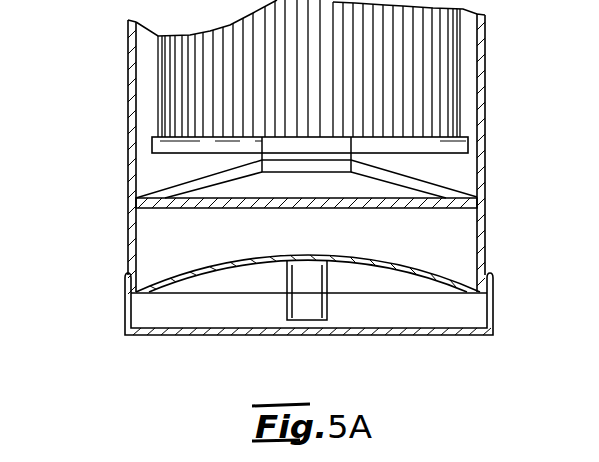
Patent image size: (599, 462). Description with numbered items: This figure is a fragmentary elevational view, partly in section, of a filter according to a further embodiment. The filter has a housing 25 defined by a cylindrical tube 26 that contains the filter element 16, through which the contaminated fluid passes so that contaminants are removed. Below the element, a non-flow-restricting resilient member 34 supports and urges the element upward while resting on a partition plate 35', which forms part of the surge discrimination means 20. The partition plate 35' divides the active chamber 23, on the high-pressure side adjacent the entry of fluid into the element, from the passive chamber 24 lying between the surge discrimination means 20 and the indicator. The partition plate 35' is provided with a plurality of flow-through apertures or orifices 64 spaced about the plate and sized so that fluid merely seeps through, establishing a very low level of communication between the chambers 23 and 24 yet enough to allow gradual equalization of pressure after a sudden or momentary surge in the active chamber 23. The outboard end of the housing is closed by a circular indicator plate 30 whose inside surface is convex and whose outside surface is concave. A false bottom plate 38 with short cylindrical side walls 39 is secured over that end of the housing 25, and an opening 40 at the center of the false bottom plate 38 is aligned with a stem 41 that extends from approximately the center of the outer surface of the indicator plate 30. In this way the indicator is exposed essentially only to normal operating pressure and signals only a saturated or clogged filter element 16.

The filter element 16 is at (440, 73).
The surge discrimination means 20 is at (397, 194).
The active chamber 23 is at (467, 172).
The passive chamber 24 is at (455, 238).
The housing 25 is at (127, 103).
The cylindrical tube 26 is at (133, 193).
The indicator plate 30 is at (206, 269).
The resilient member 34 is at (187, 182).
The partition plate 35' is at (282, 223).
The false bottom plate 38 is at (433, 339).
The cylindrical side walls 39 is at (496, 315).
The opening 40 is at (315, 336).
The stem 41 is at (328, 308).
The orifices 64 is at (368, 209).